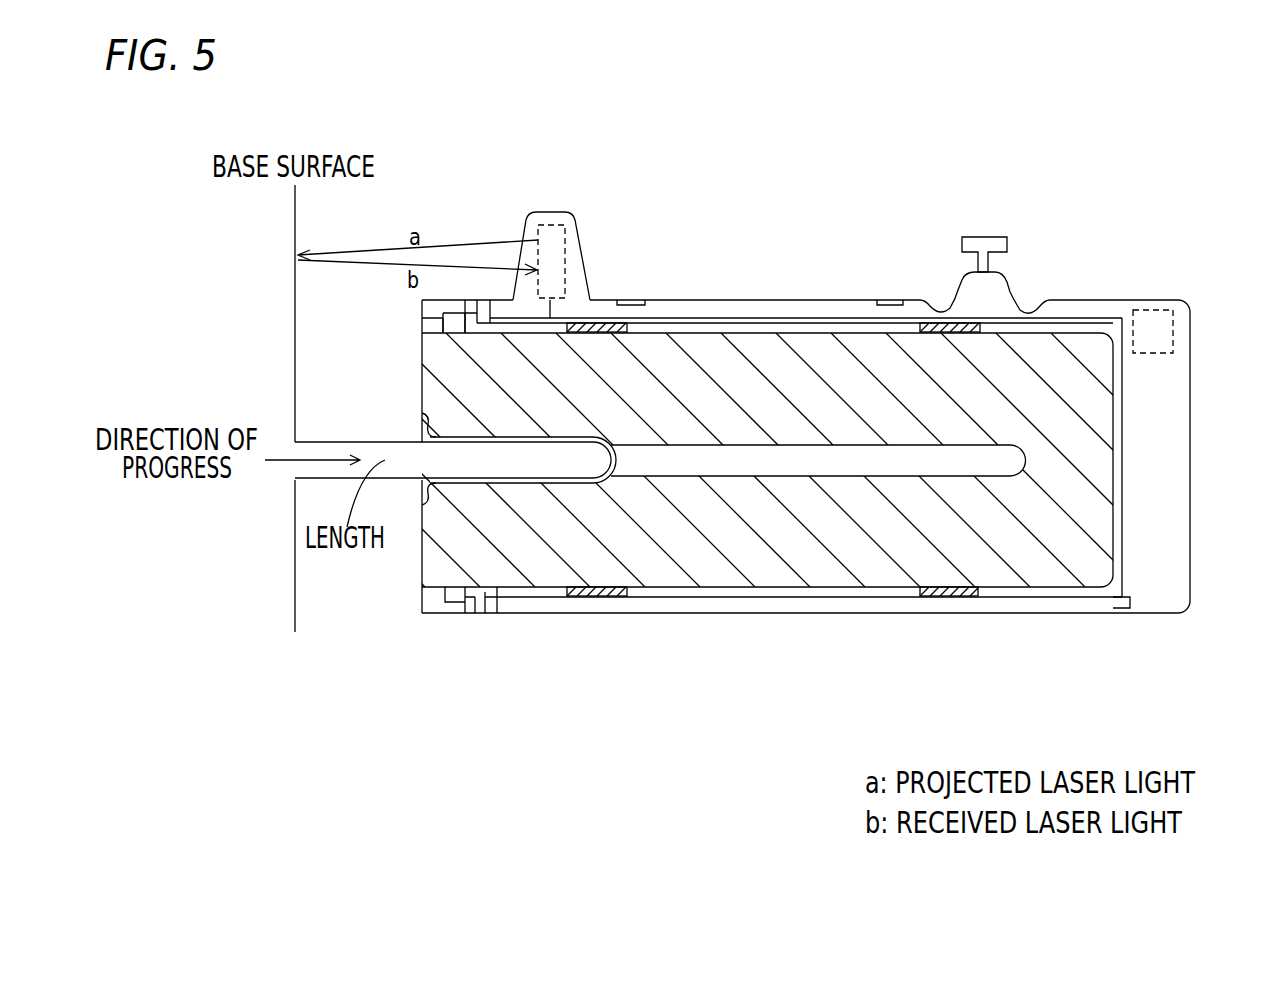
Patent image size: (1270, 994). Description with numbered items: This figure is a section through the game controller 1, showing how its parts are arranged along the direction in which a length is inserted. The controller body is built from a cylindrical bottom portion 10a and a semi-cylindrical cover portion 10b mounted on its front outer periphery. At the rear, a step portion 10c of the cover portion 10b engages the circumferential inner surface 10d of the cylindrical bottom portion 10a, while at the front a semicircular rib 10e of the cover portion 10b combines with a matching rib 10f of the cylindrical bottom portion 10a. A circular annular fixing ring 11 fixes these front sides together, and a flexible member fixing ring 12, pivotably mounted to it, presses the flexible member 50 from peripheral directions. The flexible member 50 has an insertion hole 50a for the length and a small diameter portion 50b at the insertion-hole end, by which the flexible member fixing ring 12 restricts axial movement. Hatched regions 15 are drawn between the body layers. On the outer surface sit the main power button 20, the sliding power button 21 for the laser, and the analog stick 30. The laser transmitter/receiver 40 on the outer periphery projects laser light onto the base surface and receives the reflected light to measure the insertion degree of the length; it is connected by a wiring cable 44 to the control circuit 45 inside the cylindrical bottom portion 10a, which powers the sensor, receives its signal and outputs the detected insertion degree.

The game controller 1 is at (1218, 172).
The cylindrical bottom portion 10a is at (1153, 300).
The cover portion 10b is at (800, 615).
The step portion 10c is at (1122, 610).
The circumferential inner surface 10d is at (477, 323).
The rib 10e is at (475, 615).
The rib 10f is at (768, 330).
The fixing ring 11 is at (487, 615).
The flexible member fixing ring 12 is at (440, 615).
The adhesive layer 15 is at (620, 300).
The main power button 20 is at (888, 300).
The power button 21 is at (638, 300).
The analog stick 30 is at (1003, 260).
The laser transmitter/receiver 40 is at (552, 222).
The wiring cable 44 is at (1088, 317).
The control circuit 45 is at (1180, 325).
The flexible member 50 is at (427, 350).
The insertion hole 50a is at (423, 430).
The small diameter portion 50b is at (440, 317).